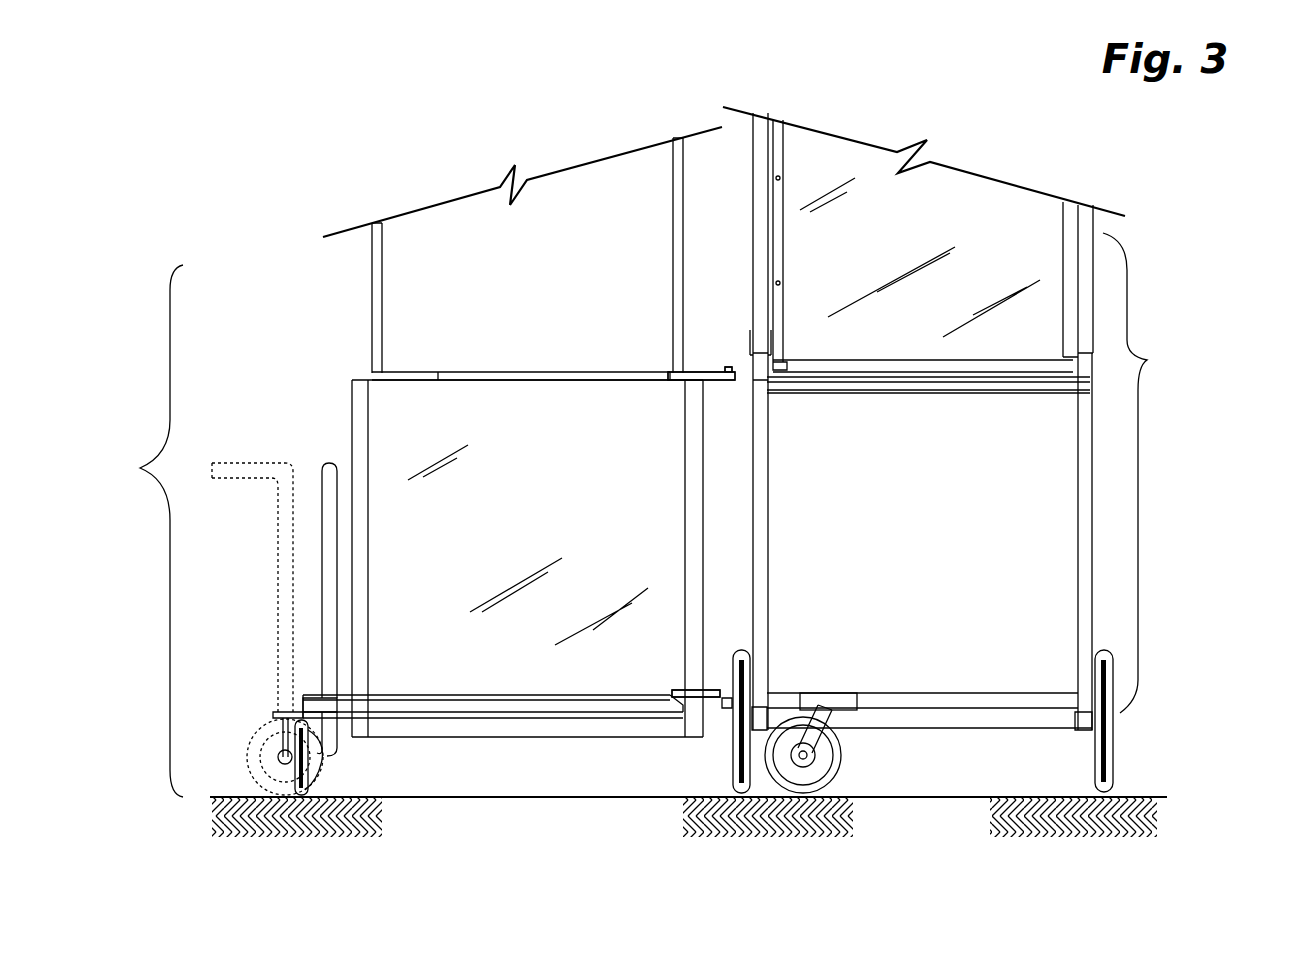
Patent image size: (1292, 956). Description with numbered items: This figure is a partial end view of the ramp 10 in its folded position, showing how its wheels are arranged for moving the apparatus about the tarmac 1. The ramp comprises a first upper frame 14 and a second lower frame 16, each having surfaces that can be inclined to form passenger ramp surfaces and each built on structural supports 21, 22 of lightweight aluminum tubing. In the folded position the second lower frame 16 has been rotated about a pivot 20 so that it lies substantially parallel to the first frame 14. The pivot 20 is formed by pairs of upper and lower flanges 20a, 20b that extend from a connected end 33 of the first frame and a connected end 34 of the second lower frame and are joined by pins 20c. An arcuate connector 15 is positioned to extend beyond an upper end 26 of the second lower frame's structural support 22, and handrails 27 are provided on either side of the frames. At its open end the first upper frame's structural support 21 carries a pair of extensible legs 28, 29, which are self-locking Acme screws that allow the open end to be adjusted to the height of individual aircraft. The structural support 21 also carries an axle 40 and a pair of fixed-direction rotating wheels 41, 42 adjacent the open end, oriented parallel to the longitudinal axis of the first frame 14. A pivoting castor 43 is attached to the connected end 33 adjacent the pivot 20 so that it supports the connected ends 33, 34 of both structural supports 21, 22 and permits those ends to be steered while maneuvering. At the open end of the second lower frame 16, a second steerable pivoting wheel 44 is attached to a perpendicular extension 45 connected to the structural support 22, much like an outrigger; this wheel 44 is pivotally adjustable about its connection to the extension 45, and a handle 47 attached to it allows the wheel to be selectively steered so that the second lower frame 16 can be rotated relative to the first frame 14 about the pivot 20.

The tarmac 1 is at (1157, 797).
The ramp 10 is at (1198, 240).
The first upper frame 14 is at (709, 496).
The arcuate connector 15 is at (505, 378).
The second lower frame 16 is at (240, 577).
The pivot 20 is at (729, 367).
The upper flanges 20a is at (692, 372).
The lower flanges 20b is at (708, 690).
The pins 20c is at (728, 382).
The structural support of the first upper frame 21 is at (1093, 612).
The structural support of the second lower frame 22 is at (353, 738).
The upper end 26 is at (370, 376).
The handrails 27 is at (372, 292).
The extensible leg 28 is at (1094, 226).
The extensible leg 29 is at (760, 205).
The connected end of the first frame 33 is at (877, 703).
The connected end of the second lower frame 34 is at (537, 737).
The axle 40 is at (933, 723).
The fixed-direction rotating wheel 41 is at (1113, 743).
The fixed-direction rotating wheel 42 is at (730, 797).
The castor 43 is at (812, 800).
The steerable pivoting wheel 44 is at (238, 822).
The perpendicular extension 45 is at (328, 712).
The handle 47 is at (322, 565).